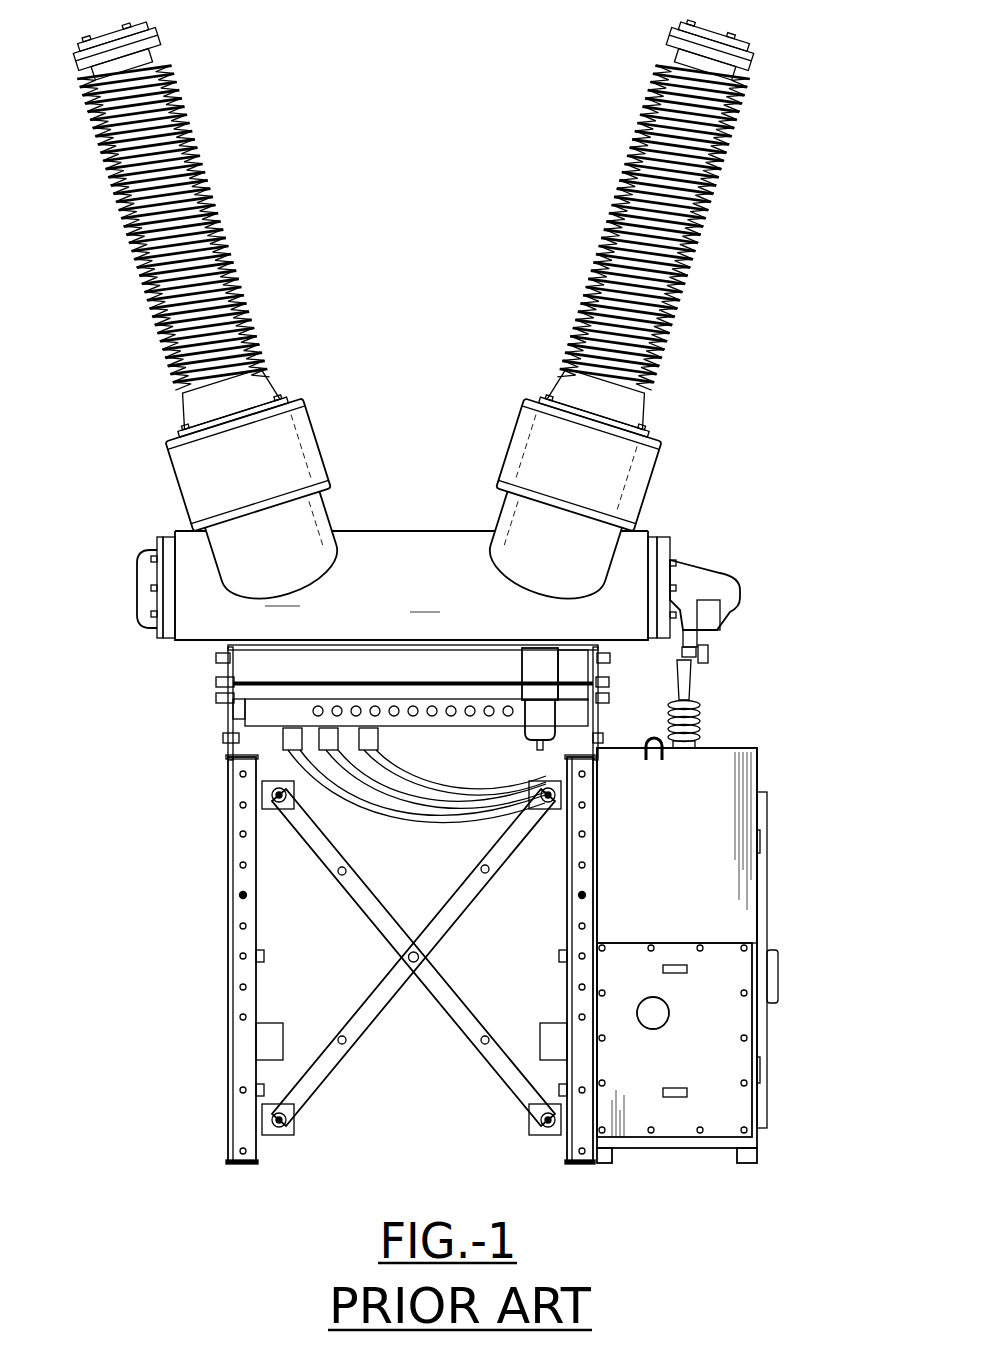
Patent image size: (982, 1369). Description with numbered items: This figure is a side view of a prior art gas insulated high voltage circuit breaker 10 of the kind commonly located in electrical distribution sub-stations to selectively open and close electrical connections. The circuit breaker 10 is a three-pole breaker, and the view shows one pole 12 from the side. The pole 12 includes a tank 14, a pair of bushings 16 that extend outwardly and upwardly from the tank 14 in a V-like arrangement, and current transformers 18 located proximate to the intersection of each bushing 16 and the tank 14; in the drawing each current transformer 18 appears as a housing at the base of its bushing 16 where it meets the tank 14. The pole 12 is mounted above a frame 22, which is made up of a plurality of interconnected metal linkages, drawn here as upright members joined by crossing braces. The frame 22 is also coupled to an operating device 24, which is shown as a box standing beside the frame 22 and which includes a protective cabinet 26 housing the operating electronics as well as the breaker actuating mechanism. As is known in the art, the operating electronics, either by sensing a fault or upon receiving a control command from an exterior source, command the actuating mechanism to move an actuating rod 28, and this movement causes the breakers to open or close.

The three-pole circuit breaker 10 is at (745, 383).
The pole 12 is at (417, 490).
The tank 14 is at (425, 605).
The bushing 16 is at (212, 230).
The current transformer 18 is at (254, 473).
The frame 22 is at (210, 870).
The operating device 24 is at (770, 765).
The protective cabinet 26 is at (646, 856).
The actuating rod 28 is at (692, 702).